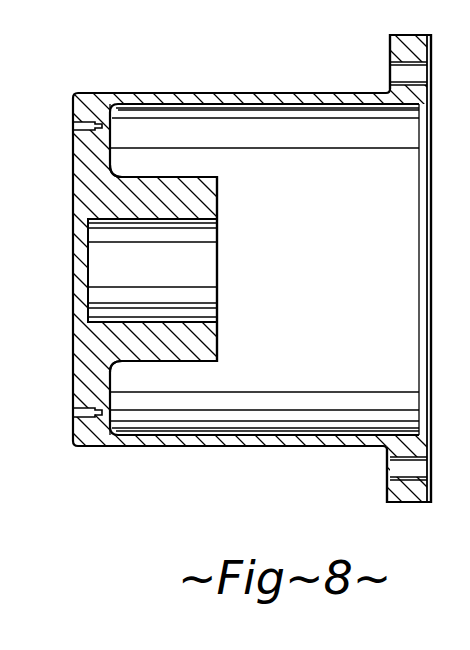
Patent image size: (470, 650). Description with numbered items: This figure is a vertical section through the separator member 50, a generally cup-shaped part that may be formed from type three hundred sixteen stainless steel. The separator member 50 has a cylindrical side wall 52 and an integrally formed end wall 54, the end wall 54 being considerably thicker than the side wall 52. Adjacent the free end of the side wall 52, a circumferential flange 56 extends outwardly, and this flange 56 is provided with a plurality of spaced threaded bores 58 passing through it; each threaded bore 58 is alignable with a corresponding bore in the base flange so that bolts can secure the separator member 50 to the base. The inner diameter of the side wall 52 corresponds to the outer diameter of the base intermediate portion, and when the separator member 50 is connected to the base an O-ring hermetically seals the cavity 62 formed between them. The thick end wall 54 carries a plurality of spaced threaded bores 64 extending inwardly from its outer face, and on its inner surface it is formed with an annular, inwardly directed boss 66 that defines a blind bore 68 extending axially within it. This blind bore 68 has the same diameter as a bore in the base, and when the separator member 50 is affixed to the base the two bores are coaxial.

The separator member 50 is at (72, 402).
The cylindrical side wall 52 is at (242, 93).
The end wall 54 is at (86, 148).
The circumferential flange 56 is at (395, 42).
The threaded bores 58 is at (398, 70).
The cavity 62 is at (362, 269).
The threaded bores 64 is at (83, 120).
The annular inwardly directed boss 66 is at (200, 338).
The blind bore 68 is at (190, 318).